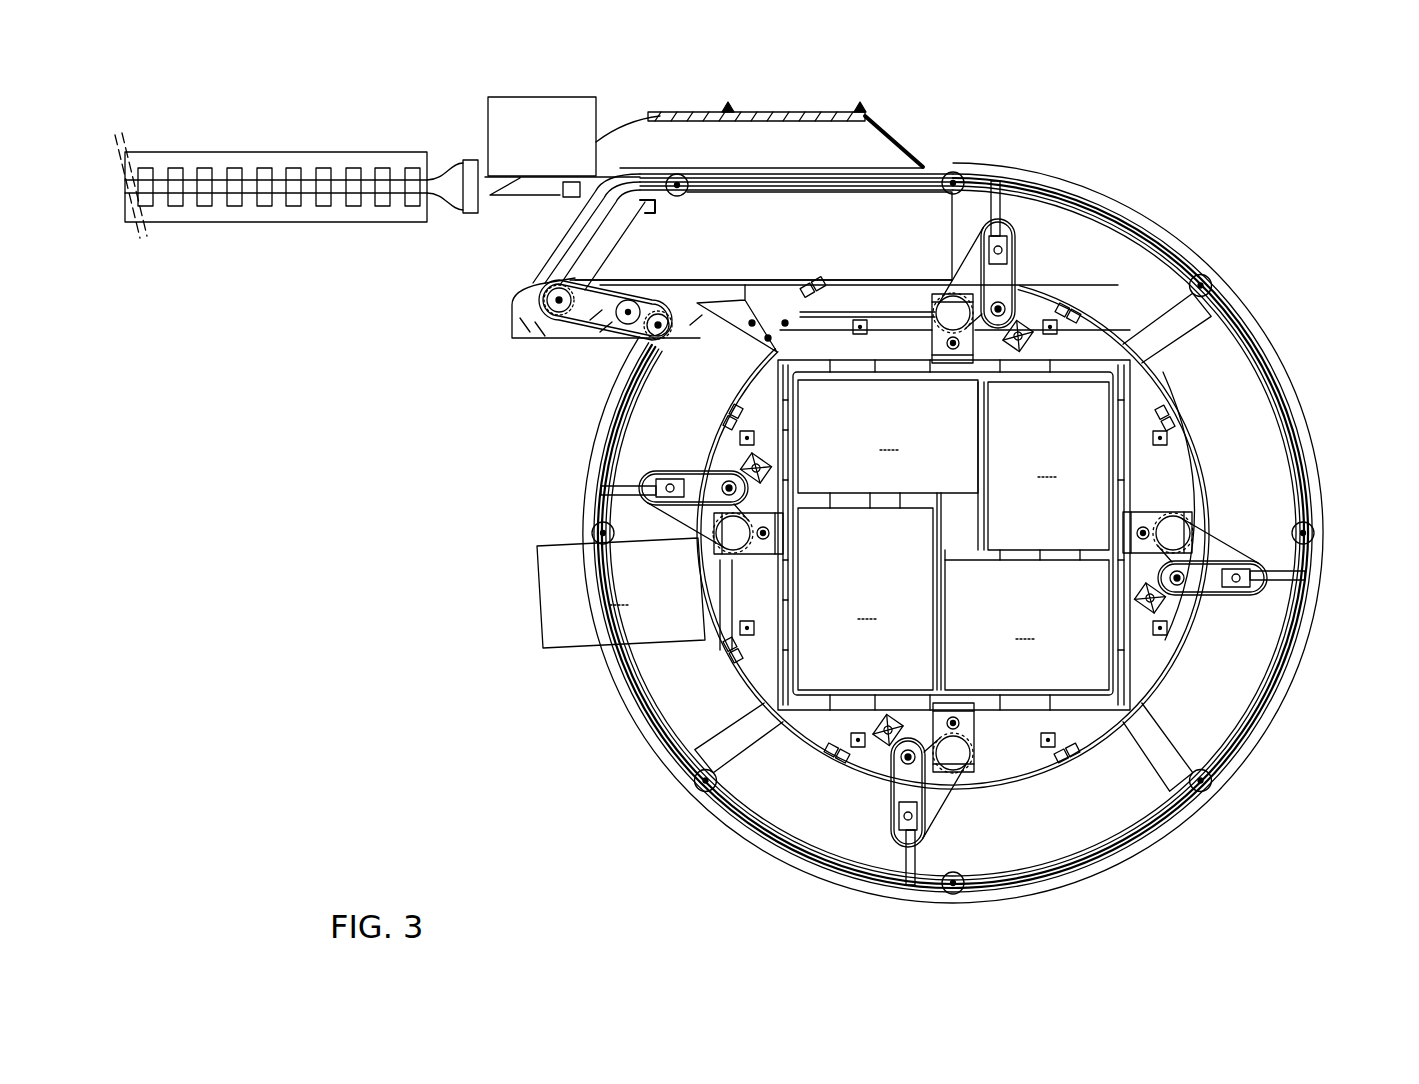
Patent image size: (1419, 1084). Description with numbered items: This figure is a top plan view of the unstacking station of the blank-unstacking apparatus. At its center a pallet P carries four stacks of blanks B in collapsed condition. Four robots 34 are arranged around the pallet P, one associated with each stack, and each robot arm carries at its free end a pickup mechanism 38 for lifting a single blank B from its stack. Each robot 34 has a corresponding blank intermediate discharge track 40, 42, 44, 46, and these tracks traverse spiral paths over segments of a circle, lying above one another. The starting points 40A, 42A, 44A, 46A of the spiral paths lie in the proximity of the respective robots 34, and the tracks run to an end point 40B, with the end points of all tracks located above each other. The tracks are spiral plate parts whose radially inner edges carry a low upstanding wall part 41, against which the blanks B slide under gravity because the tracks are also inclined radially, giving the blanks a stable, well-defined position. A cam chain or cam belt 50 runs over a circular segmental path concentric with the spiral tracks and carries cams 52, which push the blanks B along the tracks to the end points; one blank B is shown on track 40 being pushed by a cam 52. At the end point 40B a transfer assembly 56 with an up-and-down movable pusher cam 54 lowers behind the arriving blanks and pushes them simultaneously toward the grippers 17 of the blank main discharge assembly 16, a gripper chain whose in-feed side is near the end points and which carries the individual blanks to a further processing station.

The blank main discharge assembly 16 is at (290, 152).
The grippers 17 is at (392, 168).
The transfer assembly 56 is at (543, 113).
The pusher cam 54 is at (565, 194).
The cams 52 is at (677, 174).
The robots 34 is at (1010, 275).
The pickup mechanism 38 is at (1025, 325).
The pallet P is at (1065, 378).
The blank intermediate discharge track 46 is at (1055, 254).
The starting point 46A is at (1155, 297).
The upstanding wall part 41 is at (1200, 458).
The blank intermediate discharge track 44 is at (1261, 511).
The starting point 44A is at (1219, 717).
The cam chain or cam belt 50 is at (1252, 718).
The blank intermediate discharge track 42 is at (992, 847).
The starting point 42A is at (800, 789).
The blank intermediate discharge track 40 is at (706, 697).
The starting point 40A is at (735, 369).
The end point 40B is at (560, 246).